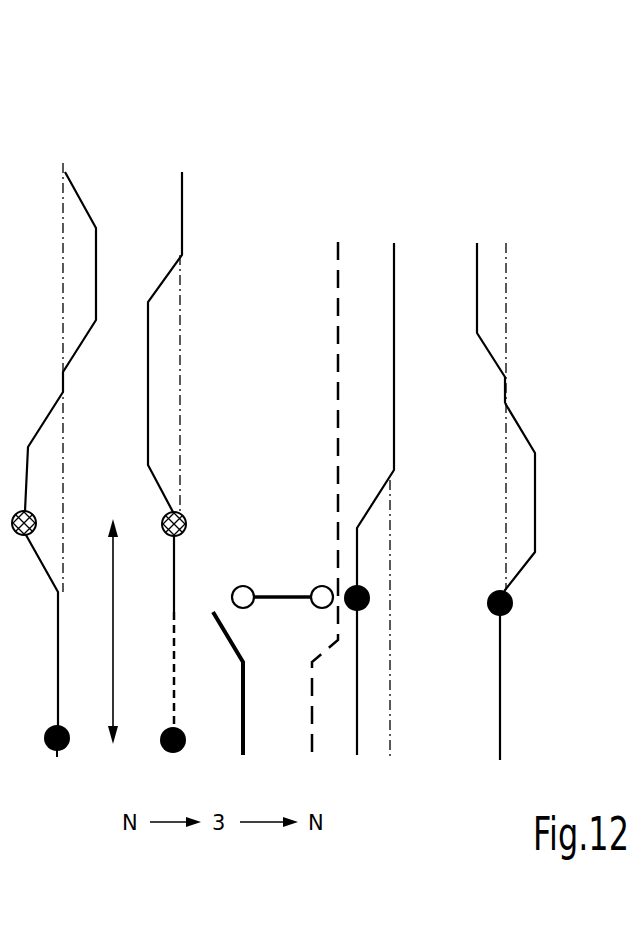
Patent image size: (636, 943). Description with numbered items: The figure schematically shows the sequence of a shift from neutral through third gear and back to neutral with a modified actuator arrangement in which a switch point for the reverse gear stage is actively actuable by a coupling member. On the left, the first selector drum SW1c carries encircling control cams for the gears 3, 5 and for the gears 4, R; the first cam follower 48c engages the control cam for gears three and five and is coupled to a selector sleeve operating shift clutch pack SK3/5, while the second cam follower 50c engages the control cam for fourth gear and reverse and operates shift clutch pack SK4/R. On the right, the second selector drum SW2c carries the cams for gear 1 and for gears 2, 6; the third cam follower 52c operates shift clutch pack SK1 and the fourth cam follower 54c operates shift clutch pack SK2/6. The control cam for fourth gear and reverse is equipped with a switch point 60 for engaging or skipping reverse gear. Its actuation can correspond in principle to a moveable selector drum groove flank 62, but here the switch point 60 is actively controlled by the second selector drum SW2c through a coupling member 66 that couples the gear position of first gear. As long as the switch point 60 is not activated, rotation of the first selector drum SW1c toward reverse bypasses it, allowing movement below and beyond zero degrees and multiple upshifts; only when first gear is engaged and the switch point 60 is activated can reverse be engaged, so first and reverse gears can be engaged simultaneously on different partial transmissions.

The first gear 1 is at (329, 498).
The second gear 2 is at (527, 503).
The third gear 3 is at (32, 591).
The fourth gear 4 is at (153, 449).
The fifth gear 5 is at (68, 341).
The sixth gear 6 is at (478, 323).
The reverse gear R is at (225, 713).
The first cam follower 48c is at (45, 742).
The second cam follower 50c is at (176, 752).
The third cam follower 52c is at (362, 608).
The fourth cam follower 54c is at (512, 606).
The switch point 60 is at (204, 568).
The moveable selector drum groove flank 62 is at (246, 725).
The coupling member 66 is at (285, 586).
The first selector drum SW1c is at (141, 148).
The second selector drum SW2c is at (447, 180).